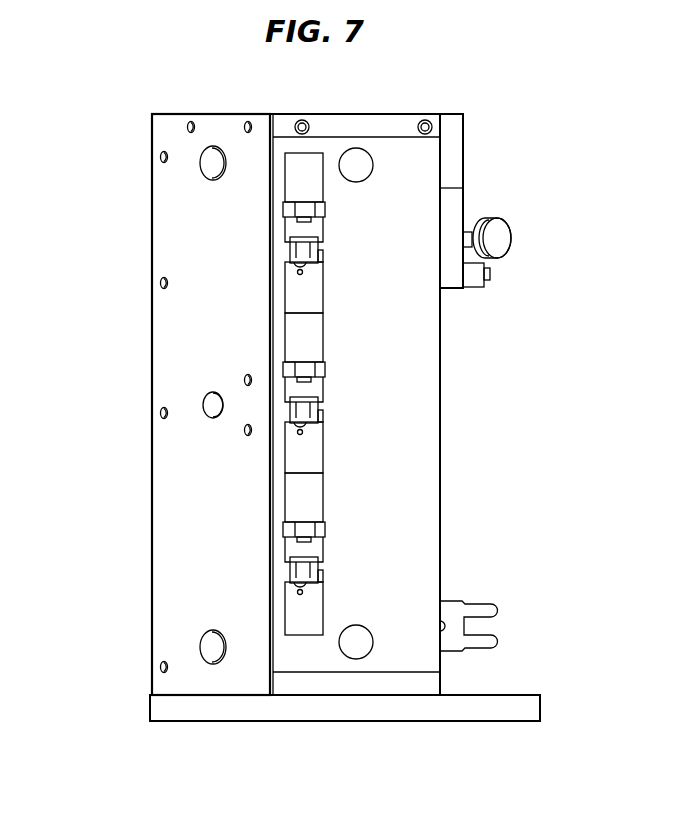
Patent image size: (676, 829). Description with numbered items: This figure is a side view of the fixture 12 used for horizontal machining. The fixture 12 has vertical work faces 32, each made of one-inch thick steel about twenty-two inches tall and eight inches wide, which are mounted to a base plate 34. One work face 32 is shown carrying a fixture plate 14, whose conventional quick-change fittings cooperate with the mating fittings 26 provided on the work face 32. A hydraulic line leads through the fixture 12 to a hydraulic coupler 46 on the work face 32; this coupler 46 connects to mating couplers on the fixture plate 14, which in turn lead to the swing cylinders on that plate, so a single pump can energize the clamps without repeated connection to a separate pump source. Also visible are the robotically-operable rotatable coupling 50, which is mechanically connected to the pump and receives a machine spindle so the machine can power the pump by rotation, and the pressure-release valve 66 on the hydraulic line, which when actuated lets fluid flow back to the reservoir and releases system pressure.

The fixture 12 is at (264, 404).
The fixture plate 14 is at (270, 222).
The mating fitting 26 is at (202, 152).
The work face 32 is at (182, 375).
The base plate 34 is at (172, 707).
The hydraulic coupler 46 is at (208, 415).
The rotatable coupling 50 is at (490, 650).
The pressure-release valve 66 is at (475, 287).